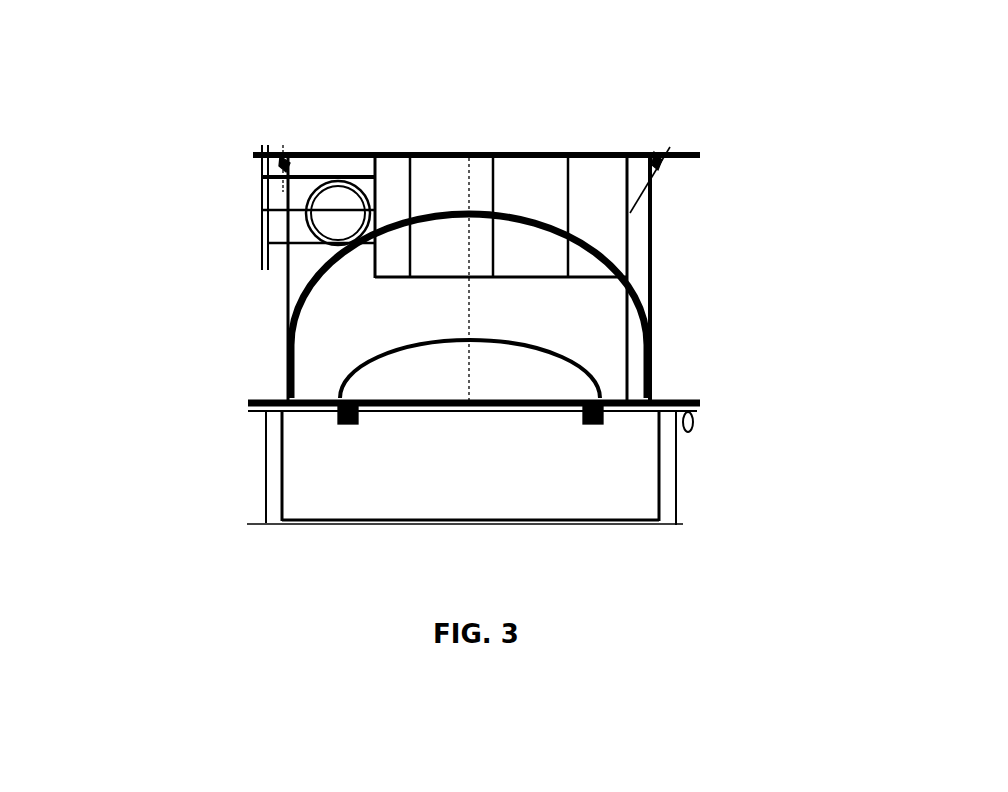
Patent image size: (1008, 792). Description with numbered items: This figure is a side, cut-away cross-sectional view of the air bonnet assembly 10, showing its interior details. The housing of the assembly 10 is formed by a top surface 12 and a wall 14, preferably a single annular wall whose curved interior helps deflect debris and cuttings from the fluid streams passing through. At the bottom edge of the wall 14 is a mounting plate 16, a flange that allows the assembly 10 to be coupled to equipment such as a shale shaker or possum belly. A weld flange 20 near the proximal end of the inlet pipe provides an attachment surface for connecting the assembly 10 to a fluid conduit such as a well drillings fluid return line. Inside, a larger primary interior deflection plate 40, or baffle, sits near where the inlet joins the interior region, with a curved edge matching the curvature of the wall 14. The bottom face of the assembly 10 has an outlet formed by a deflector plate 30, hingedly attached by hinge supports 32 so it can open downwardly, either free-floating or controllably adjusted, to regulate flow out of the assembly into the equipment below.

The air bonnet assembly 10 is at (172, 617).
The top surface 12 is at (495, 148).
The wall 14 is at (662, 254).
The mounting plate 16 is at (700, 392).
The weld flange 20 is at (262, 176).
The deflector plate 30 is at (301, 484).
The hinge supports 32 is at (600, 418).
The primary interior deflection plate 40 is at (380, 260).